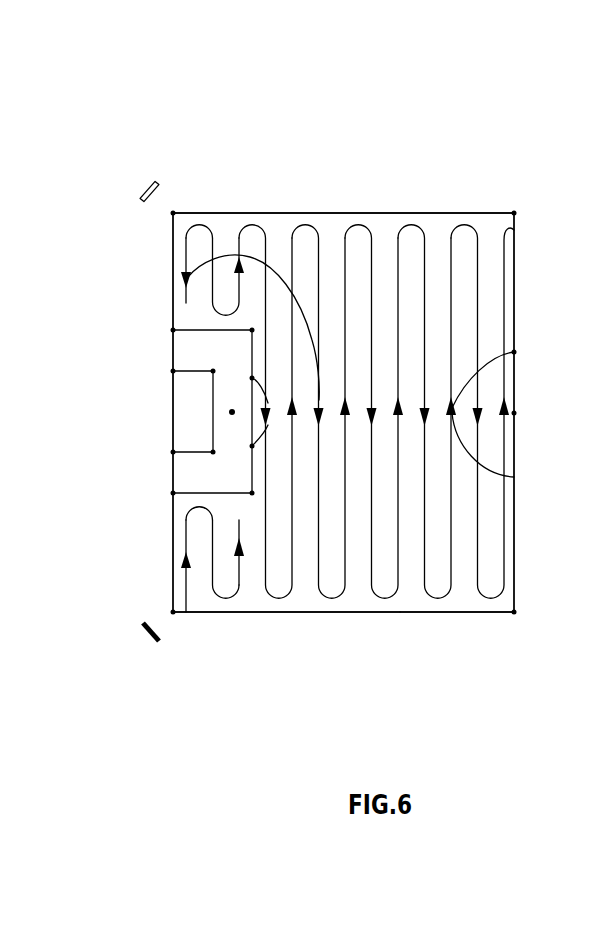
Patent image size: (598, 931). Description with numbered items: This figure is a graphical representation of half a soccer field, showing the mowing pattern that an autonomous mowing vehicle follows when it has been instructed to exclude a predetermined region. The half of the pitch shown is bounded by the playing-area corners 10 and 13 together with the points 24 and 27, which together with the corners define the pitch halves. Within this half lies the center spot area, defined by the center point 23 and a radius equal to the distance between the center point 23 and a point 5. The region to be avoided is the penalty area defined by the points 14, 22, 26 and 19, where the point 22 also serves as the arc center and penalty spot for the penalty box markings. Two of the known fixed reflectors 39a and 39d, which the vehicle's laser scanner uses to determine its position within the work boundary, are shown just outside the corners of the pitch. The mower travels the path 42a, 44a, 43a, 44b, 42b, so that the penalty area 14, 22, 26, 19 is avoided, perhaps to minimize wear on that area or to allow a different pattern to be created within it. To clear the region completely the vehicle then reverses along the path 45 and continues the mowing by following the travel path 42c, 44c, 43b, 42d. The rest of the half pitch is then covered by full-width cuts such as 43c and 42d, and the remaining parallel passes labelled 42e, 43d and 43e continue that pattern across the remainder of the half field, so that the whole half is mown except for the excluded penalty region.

The point 5 is at (514, 352).
The corner 10 is at (173, 213).
The corner 13 is at (173, 612).
The penalty box region point 14 is at (173, 330).
The penalty box region point 19 is at (173, 493).
The penalty box region point / arc center and penalty spot 22 is at (252, 330).
The center point 23 is at (514, 413).
The point 24 is at (514, 213).
The penalty box region point 26 is at (252, 493).
The point 27 is at (514, 612).
The fixed reflector 39a is at (143, 186).
The fixed reflector 39d is at (143, 628).
The travel path 42a is at (187, 612).
The travel path 42b is at (241, 550).
The travel path 42c is at (186, 275).
The travel path / full width cut 42d is at (265, 258).
The flow channel 42e is at (345, 400).
The travel path 43a is at (212, 597).
The travel path 43b is at (238, 265).
The full width cut 43c is at (268, 418).
The channel turn 43d is at (344, 228).
The channel turn 43e is at (372, 412).
The travel path 44a is at (198, 531).
The travel path 44b is at (239, 598).
The travel path 44c is at (188, 240).
The path 45 is at (317, 483).